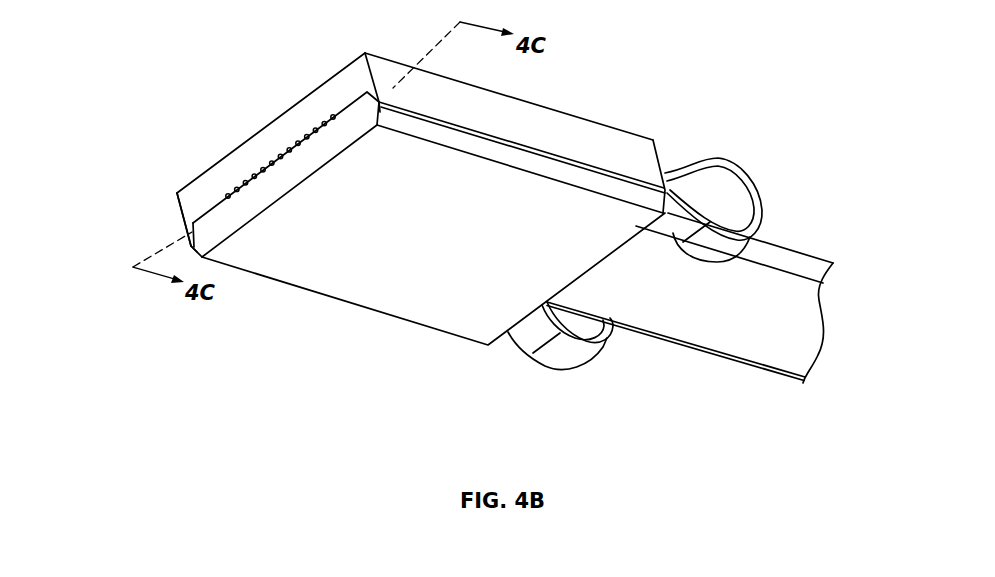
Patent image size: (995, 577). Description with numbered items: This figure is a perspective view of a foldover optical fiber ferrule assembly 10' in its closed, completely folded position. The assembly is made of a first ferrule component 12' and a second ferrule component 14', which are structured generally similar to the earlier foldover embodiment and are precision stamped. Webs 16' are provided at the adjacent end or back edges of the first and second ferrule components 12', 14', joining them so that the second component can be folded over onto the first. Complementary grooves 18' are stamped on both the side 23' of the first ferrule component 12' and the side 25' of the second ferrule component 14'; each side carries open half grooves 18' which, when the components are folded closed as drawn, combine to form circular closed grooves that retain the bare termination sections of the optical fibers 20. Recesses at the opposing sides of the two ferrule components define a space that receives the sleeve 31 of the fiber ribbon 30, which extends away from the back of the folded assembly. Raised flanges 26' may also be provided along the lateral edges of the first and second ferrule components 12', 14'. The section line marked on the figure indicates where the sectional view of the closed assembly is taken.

The ferrule assembly 10' is at (409, 258).
The first ferrule component 12' is at (433, 294).
The second ferrule component 14' is at (515, 133).
The webs 16' is at (658, 292).
The grooves 18' is at (395, 155).
The optical fibers 20 is at (270, 158).
The side of first ferrule component 23' is at (155, 214).
The side of second ferrule component 25' is at (286, 142).
The raised flanges 26' is at (292, 151).
The fiber ribbon 30 is at (813, 252).
The sleeve 31 is at (767, 353).